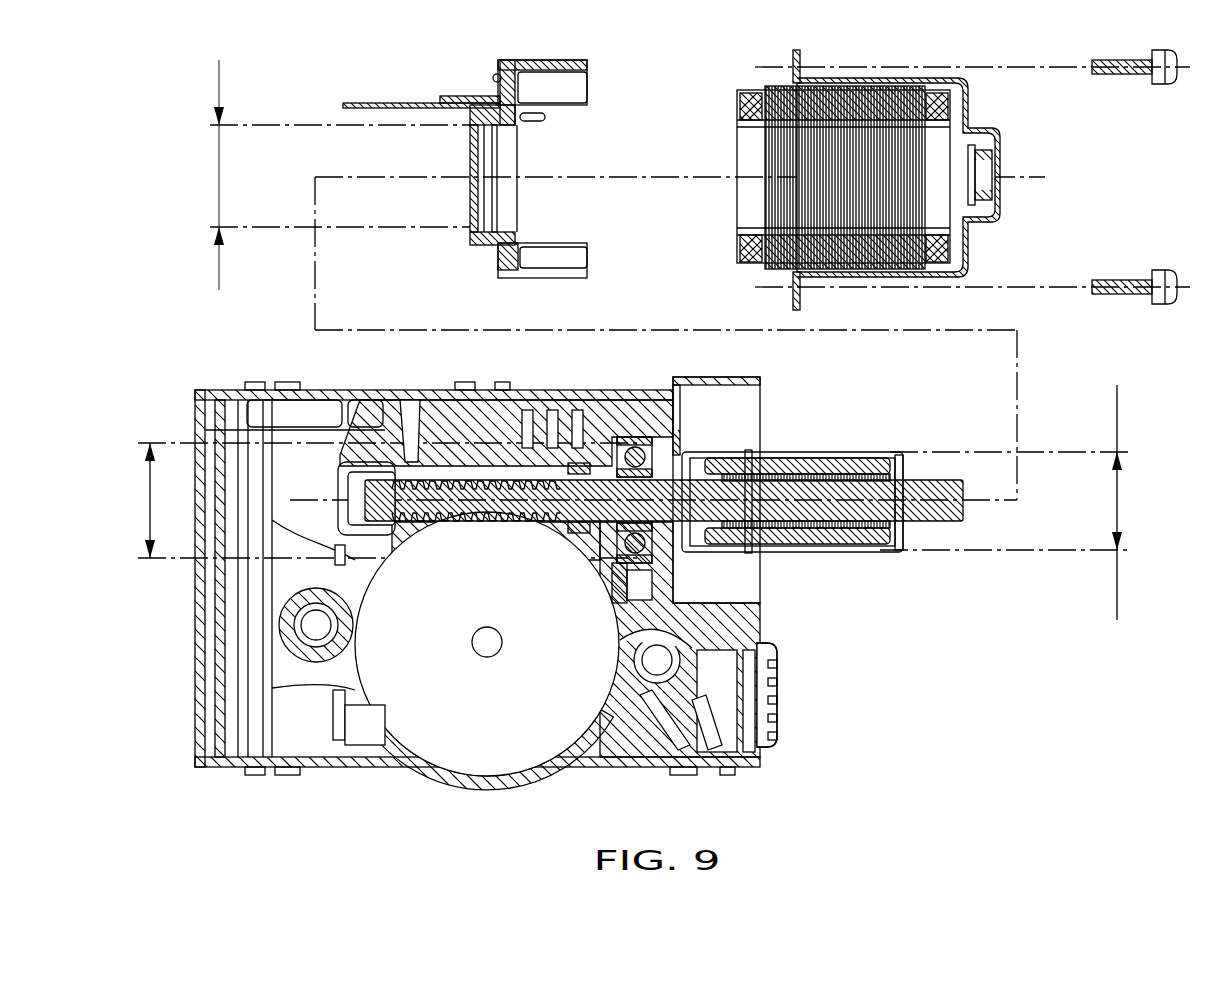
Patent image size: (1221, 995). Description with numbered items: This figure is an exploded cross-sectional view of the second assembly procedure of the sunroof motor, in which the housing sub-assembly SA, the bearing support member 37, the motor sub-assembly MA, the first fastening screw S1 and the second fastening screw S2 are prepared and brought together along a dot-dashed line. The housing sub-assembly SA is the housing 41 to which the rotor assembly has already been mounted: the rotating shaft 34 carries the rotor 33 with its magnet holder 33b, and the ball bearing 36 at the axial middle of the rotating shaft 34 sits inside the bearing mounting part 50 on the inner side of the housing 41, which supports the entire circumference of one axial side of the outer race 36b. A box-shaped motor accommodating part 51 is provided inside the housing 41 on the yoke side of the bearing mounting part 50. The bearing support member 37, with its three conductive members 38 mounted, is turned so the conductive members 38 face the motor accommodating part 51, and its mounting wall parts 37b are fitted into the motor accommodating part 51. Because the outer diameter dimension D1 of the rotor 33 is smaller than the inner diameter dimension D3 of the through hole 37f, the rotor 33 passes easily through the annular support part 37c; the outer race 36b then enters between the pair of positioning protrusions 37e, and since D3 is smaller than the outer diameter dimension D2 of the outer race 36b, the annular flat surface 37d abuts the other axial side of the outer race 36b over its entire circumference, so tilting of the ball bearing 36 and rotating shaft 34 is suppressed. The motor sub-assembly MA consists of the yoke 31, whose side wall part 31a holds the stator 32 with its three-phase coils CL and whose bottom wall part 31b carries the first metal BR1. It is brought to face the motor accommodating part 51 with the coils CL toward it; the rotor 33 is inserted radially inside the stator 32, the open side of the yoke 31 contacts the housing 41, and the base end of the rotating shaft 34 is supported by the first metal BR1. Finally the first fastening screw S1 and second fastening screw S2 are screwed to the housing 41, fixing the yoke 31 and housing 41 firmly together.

The yoke 31 is at (760, 170).
The side wall part 31a is at (875, 78).
The bottom wall part 31b is at (990, 222).
The stator 32 is at (877, 280).
The rotor 33 is at (823, 490).
The magnet holder 33b is at (895, 552).
The rotating shaft 34 is at (963, 510).
The ball bearing 36 is at (718, 466).
The outer race 36b is at (652, 570).
The bearing support member 37 is at (760, 169).
The mounting wall parts 37b is at (540, 78).
The annular support part 37c is at (475, 243).
The annular flat surface 37d is at (470, 225).
The positioning protrusions 37e is at (460, 110).
The through hole 37f is at (495, 188).
The conductive members 38 is at (410, 100).
The housing 41 is at (333, 388).
The bearing mounting part 50 is at (624, 430).
The motor accommodating part 51 is at (738, 415).
The first metal BR1 is at (990, 140).
The coils CL is at (738, 245).
The motor sub-assembly MA is at (760, 176).
The housing sub-assembly SA is at (788, 746).
The first fastening screw S1 is at (1170, 84).
The second fastening screw S2 is at (1170, 304).
The outer diameter dimension of the rotor D1 is at (1005, 502).
The outer diameter dimension of the ball bearing D2 is at (378, 500).
The inner diameter dimension of the through hole D3 is at (326, 175).